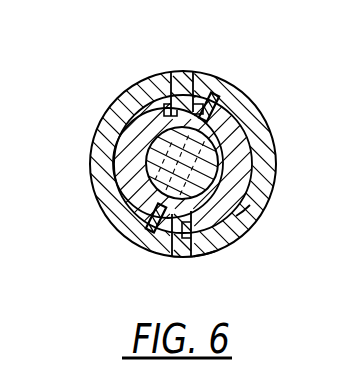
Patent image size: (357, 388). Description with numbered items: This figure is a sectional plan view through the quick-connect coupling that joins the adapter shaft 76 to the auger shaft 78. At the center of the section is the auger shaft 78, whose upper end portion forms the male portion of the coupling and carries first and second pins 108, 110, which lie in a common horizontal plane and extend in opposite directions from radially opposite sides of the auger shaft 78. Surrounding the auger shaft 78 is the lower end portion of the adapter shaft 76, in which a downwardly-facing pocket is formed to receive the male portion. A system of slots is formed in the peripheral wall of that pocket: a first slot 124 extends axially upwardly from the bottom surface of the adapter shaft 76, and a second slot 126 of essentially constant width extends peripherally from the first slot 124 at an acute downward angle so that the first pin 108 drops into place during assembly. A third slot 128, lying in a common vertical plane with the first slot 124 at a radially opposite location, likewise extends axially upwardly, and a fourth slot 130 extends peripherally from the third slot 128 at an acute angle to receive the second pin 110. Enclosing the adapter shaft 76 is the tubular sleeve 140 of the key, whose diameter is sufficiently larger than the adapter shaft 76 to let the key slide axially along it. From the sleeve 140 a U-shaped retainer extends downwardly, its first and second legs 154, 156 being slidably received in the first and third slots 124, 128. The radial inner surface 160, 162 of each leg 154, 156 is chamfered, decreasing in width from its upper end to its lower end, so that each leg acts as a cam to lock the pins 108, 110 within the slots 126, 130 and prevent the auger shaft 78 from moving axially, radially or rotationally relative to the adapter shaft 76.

The adapter shaft 76 is at (242, 167).
The auger shaft 78 is at (234, 202).
The first pin 108 is at (146, 230).
The second pin 110 is at (213, 97).
The first slot 124 is at (203, 258).
The second slot 126 is at (152, 203).
The third slot 128 is at (166, 100).
The fourth slot 130 is at (229, 134).
The tubular sleeve 140 is at (100, 137).
The first leg 154 is at (179, 260).
The second leg 156 is at (184, 70).
The radial inner surface of first leg 160 is at (250, 229).
The radial inner surface of second leg 162 is at (147, 156).